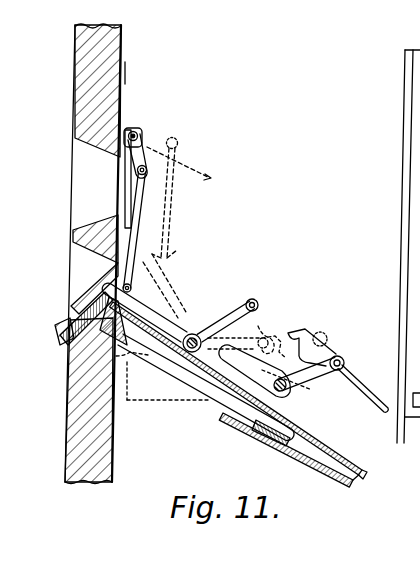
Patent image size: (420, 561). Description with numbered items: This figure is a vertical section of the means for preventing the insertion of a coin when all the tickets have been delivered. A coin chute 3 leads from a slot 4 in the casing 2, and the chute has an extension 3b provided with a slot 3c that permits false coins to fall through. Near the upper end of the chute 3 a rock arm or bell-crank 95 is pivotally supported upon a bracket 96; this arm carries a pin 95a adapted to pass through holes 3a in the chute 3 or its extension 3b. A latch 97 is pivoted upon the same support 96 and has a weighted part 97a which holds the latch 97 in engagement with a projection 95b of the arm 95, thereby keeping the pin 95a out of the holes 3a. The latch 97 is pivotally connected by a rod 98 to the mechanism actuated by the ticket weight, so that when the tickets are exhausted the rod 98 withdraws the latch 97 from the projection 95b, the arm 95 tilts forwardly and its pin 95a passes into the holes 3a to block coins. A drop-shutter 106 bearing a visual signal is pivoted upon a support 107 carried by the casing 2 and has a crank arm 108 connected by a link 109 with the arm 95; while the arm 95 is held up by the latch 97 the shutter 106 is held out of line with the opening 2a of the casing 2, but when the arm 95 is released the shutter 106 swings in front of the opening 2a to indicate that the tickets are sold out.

The casing 2 is at (82, 254).
The opening of casing 2a is at (83, 188).
The drop-shutter 106 is at (127, 202).
The support 107 is at (135, 133).
The crank arm 108 is at (147, 148).
The link 109 is at (136, 238).
The slot 4 is at (85, 300).
The pin 95a is at (80, 336).
The rock arm or bell-crank 95 is at (157, 318).
The projection of arm 95b is at (252, 299).
The weighted part 97a is at (238, 357).
The latch 97 is at (302, 329).
The bracket or support 96 is at (300, 384).
The rod 98 is at (359, 381).
The coin chute 3 is at (320, 447).
The holes 3a is at (155, 400).
The extension of chute 3b is at (202, 385).
The slot 3c is at (220, 405).